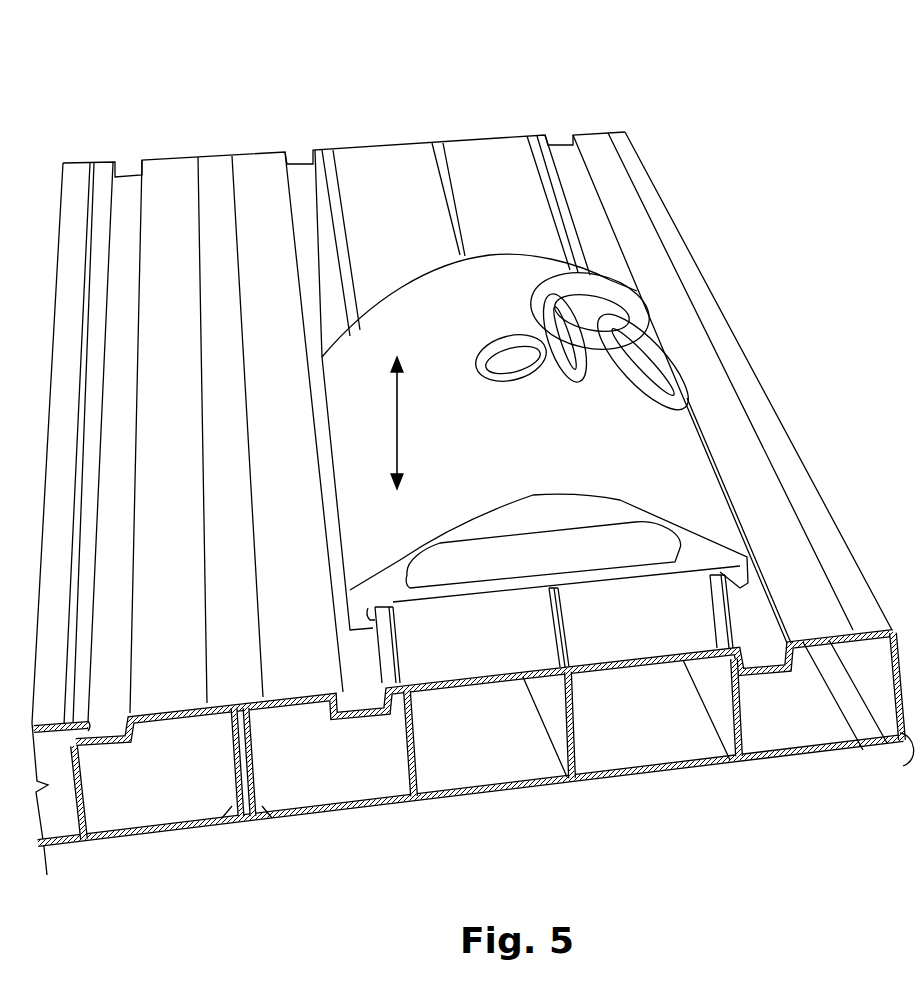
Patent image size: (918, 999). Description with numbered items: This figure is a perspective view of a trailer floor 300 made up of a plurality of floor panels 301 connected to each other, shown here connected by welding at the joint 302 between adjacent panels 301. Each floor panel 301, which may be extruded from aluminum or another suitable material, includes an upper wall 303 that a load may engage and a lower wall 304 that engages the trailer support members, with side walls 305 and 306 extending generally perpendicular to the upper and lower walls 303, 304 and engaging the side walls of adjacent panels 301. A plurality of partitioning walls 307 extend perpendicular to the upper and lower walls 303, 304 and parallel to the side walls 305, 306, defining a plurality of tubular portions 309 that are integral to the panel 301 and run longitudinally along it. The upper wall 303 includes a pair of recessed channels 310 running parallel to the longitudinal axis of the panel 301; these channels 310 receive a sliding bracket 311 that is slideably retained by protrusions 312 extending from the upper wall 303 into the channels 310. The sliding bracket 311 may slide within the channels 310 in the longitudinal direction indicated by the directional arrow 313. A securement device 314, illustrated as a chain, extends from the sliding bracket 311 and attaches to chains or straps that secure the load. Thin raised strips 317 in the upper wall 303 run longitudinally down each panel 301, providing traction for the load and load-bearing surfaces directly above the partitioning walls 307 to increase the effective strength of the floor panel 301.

The trailer floor 300 is at (638, 78).
The floor panel 301 is at (838, 526).
The joint 302 is at (250, 827).
The upper wall 303 is at (680, 650).
The lower wall 304 is at (533, 792).
The side wall 305 is at (253, 783).
The side wall 306 is at (917, 767).
The partitioning wall 307 is at (410, 727).
The tubular portion 309 is at (337, 790).
The recessed channel 310 is at (368, 700).
The sliding bracket 311 is at (535, 442).
The protrusion 312 is at (392, 672).
The directional arrow 313 is at (397, 398).
The securement device 314 is at (541, 284).
The raised strip 317 is at (393, 627).